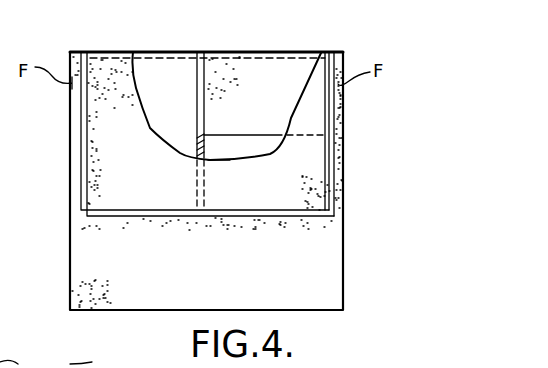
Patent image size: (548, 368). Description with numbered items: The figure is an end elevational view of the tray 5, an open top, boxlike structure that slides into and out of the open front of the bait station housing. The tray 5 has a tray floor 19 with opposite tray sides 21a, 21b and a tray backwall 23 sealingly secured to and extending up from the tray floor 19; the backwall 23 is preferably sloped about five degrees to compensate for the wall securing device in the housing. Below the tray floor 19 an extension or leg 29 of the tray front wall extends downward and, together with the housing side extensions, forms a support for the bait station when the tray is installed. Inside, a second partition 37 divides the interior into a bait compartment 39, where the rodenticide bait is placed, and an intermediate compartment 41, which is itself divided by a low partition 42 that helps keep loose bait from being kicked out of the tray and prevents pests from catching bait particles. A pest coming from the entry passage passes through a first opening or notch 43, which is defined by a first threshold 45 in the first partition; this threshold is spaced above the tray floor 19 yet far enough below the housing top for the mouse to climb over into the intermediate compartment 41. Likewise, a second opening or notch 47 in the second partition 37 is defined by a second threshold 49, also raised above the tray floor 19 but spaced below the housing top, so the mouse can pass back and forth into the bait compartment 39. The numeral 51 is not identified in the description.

The tray 5 is at (303, 52).
The tray floor 19 is at (193, 222).
The tray side 21a is at (79, 162).
The tray side 21b is at (335, 155).
The tray backwall 23 is at (288, 193).
The extension or leg 29 is at (309, 289).
The second partition 37 is at (189, 156).
The bait compartment 39 is at (170, 89).
The intermediate compartment 41 is at (261, 147).
The low partition 42 is at (250, 148).
The first opening or notch 43 is at (205, 92).
The first threshold 45 is at (245, 128).
The second opening or notch 47 is at (191, 84).
The second threshold 49 is at (203, 138).
The element 51 is at (66, 344).